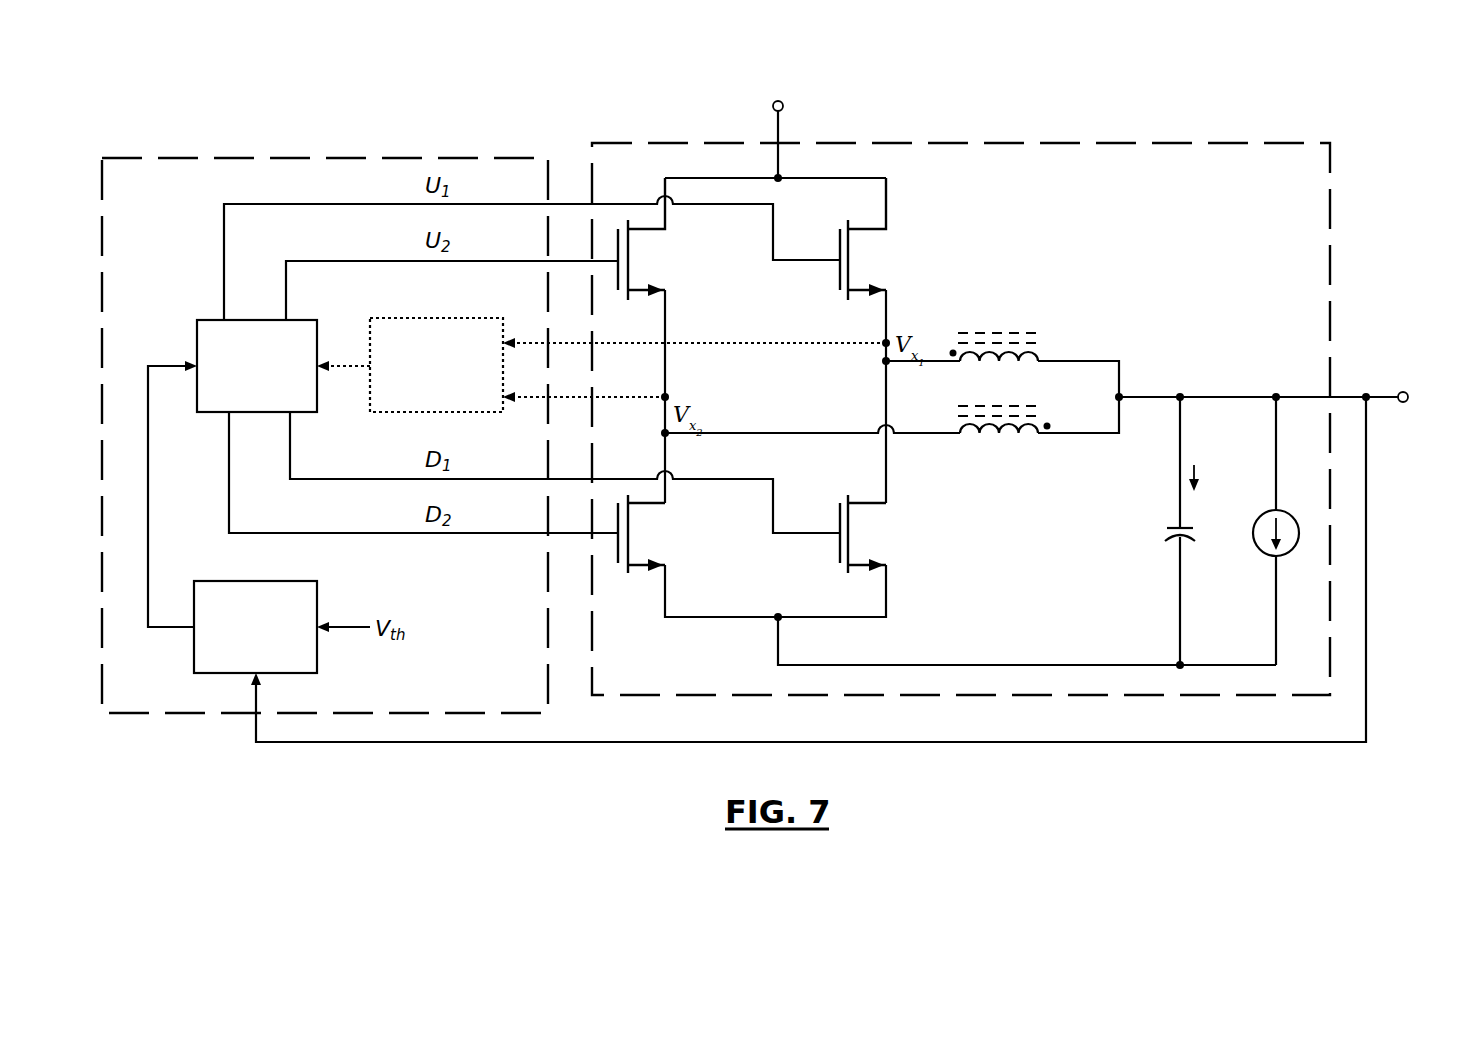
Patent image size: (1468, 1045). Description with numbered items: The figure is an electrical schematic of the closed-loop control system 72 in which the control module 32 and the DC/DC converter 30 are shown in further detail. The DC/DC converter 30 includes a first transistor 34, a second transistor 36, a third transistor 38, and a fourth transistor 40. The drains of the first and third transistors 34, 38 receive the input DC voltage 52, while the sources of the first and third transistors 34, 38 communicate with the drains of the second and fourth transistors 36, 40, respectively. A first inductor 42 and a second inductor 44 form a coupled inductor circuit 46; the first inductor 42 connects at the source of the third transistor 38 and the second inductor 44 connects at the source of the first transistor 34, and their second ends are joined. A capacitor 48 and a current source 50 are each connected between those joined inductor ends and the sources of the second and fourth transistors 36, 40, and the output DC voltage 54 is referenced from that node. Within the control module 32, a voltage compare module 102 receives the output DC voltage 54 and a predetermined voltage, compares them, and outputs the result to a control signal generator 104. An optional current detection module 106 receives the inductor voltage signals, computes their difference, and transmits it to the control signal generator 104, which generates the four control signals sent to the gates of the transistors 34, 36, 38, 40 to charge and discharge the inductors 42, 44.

The DC/DC converter 30 is at (1300, 143).
The control module 32 is at (210, 158).
The first transistor 34 is at (628, 270).
The second transistor 36 is at (628, 543).
The third transistor 38 is at (848, 270).
The fourth transistor 40 is at (848, 543).
The first inductor 42 is at (1038, 356).
The second inductor 44 is at (1005, 438).
The coupled inductor circuit 46 is at (1030, 375).
The capacitor 48 is at (1168, 540).
The current source 50 is at (1262, 556).
The input DC voltage 52 is at (812, 72).
The output DC voltage 54 is at (1402, 373).
The closed-loop control system 72 is at (515, 100).
The voltage compare module 102 is at (317, 600).
The control signal generator 104 is at (205, 320).
The current detection module 106 is at (413, 318).